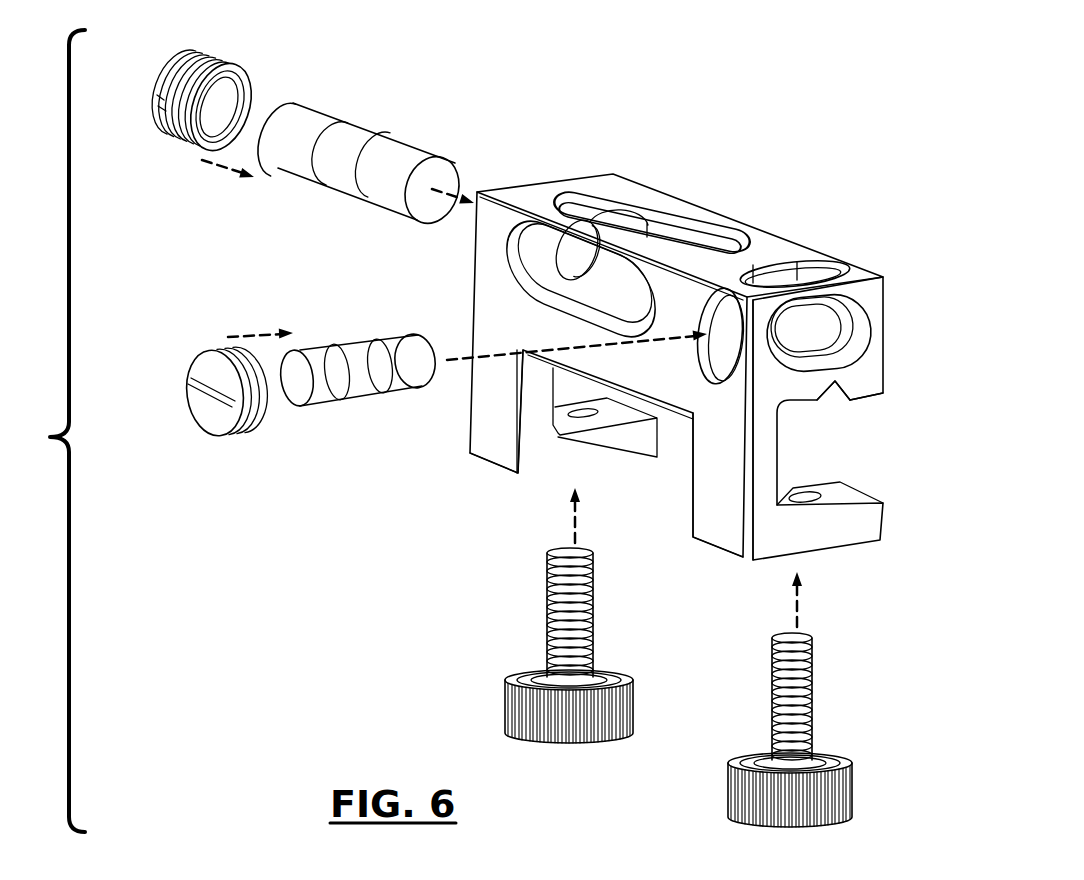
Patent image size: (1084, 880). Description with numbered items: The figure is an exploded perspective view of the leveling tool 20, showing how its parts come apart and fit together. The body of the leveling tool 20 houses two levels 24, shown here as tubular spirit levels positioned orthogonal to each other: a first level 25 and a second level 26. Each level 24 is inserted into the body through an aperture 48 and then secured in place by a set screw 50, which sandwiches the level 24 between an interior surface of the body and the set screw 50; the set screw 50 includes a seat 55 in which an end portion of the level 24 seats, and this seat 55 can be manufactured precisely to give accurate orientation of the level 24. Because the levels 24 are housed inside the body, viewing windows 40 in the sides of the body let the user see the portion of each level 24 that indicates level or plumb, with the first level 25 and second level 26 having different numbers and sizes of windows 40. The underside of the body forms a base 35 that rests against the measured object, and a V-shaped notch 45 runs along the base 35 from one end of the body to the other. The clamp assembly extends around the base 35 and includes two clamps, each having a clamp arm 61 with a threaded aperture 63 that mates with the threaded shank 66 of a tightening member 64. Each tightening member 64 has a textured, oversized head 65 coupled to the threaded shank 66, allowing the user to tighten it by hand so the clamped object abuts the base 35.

The leveling tool 20 is at (877, 147).
The level 24 is at (327, 120).
The first level 25 is at (367, 136).
The second level 26 is at (370, 395).
The base 35 is at (855, 397).
The viewing window 40 is at (690, 222).
The notch 45 is at (825, 398).
The aperture 48 is at (572, 250).
The set screw 50 is at (207, 66).
The seat 55 is at (232, 102).
The clamp arm 61 is at (488, 447).
The threaded aperture 63 is at (585, 418).
The tightening member 64 is at (523, 683).
The head 65 is at (507, 713).
The threaded shank 66 is at (552, 610).